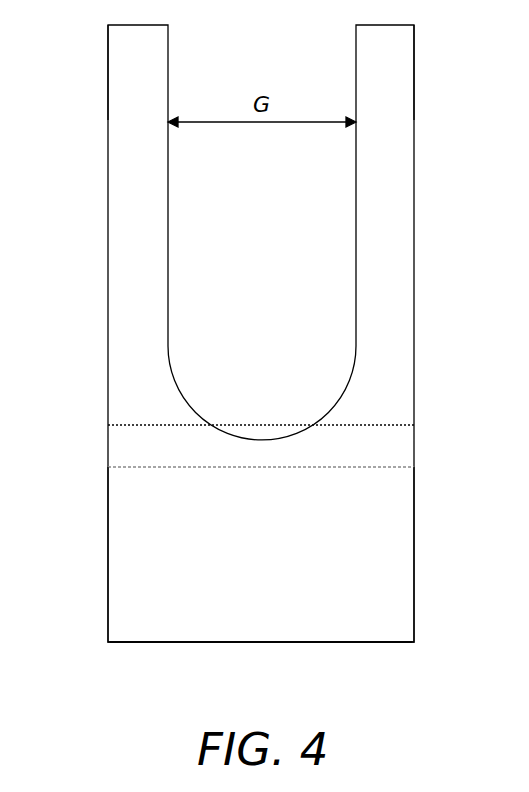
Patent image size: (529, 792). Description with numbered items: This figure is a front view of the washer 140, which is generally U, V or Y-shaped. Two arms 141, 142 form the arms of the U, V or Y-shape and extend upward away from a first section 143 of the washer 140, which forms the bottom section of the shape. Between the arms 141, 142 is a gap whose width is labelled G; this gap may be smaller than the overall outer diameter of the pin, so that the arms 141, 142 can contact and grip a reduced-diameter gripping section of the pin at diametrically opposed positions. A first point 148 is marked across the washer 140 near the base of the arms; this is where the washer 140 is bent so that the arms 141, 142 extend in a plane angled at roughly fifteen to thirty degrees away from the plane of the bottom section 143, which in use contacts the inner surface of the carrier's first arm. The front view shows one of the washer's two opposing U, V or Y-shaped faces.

The washer 140 is at (414, 278).
The arm 141 is at (115, 37).
The arm 142 is at (407, 40).
The first section 143 is at (414, 513).
The first point 148 is at (414, 448).